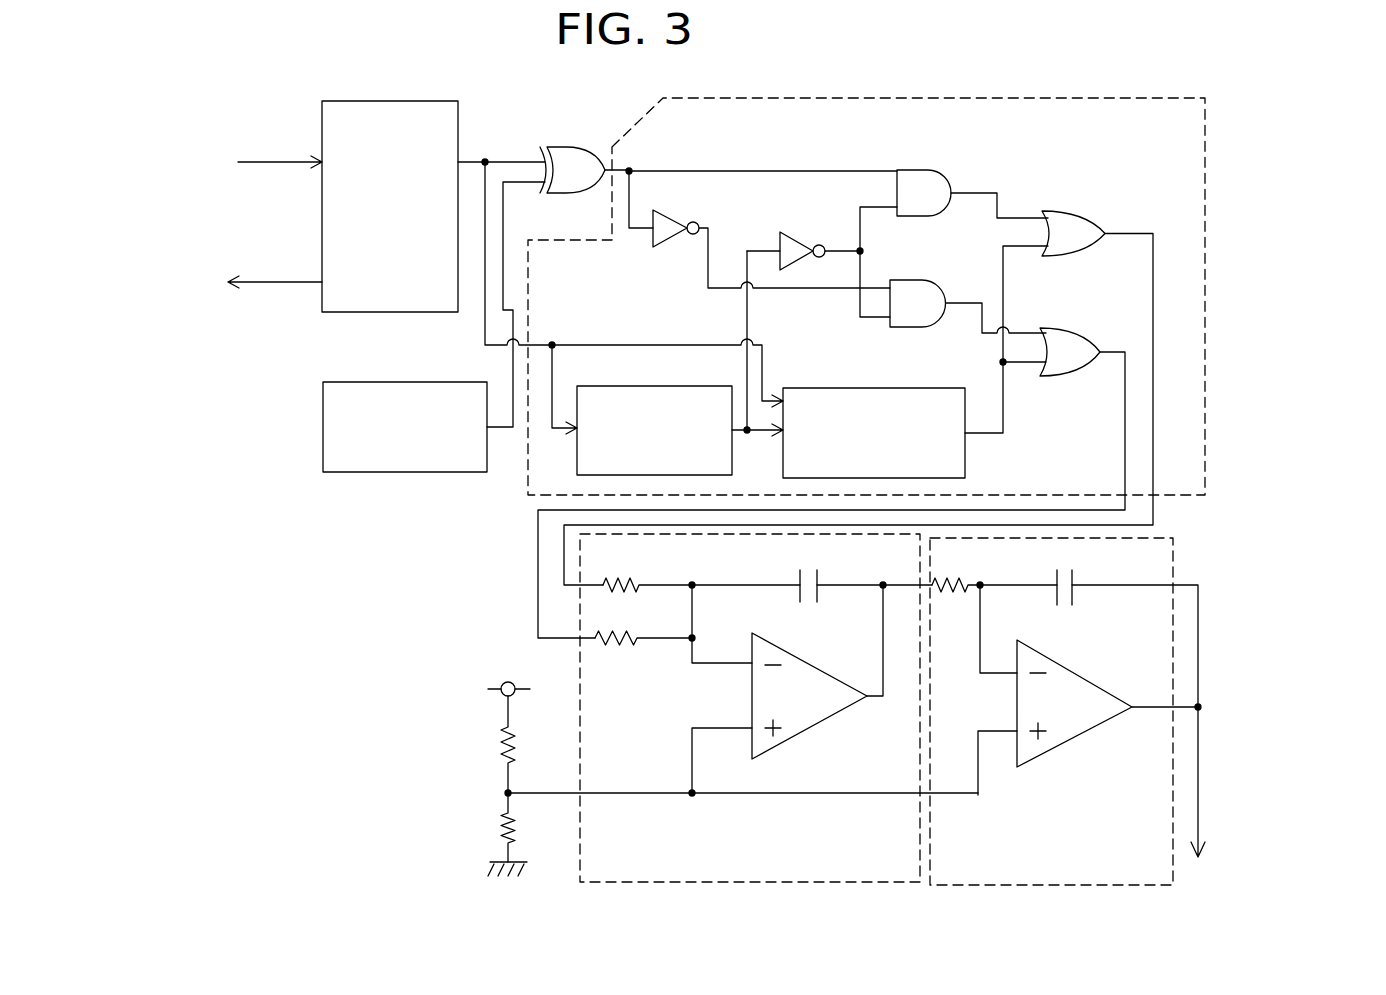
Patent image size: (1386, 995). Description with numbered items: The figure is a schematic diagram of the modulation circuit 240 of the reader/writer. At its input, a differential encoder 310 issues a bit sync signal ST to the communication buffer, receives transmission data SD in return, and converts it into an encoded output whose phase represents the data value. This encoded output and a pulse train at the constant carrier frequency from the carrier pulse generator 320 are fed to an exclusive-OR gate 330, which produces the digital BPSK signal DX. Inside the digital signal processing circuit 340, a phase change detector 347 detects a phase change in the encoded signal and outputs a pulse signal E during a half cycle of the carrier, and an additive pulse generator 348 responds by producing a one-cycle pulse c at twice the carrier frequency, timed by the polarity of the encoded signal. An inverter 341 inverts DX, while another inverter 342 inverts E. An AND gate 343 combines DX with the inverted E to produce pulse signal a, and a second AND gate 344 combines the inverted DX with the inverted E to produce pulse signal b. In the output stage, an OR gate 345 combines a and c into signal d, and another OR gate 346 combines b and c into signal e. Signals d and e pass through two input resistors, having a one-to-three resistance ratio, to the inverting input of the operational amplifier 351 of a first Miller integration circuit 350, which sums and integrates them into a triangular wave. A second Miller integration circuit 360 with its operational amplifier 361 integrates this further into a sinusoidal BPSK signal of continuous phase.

The modulation circuit 240 is at (971, 75).
The differential encoder 310 is at (383, 101).
The carrier pulse generator 320 is at (405, 472).
The exclusive-OR gate 330 is at (561, 193).
The digital signal processing circuit 340 is at (833, 97).
The inverter 341 is at (671, 218).
The inverter 342 is at (797, 232).
The AND gate 343 is at (920, 170).
The AND gate 344 is at (923, 280).
The OR gate 345 is at (1082, 211).
The OR gate 346 is at (1072, 376).
The phase change detector 347 is at (645, 386).
The additive pulse generator 348 is at (906, 388).
The Miller integration circuit 350 is at (796, 708).
The operational amplifier 351 is at (812, 727).
The Miller integration circuit 360 is at (1094, 708).
The operational amplifier 361 is at (1080, 733).